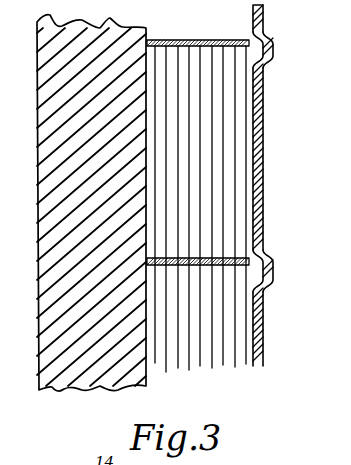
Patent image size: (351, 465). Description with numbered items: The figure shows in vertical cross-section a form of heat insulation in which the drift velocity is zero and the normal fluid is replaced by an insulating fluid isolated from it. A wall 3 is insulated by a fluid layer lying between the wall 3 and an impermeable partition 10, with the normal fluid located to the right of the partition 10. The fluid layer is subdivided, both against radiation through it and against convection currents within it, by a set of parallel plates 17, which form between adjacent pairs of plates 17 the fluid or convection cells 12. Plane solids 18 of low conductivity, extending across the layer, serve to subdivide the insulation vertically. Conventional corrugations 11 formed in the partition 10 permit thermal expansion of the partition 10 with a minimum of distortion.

The wall 3 is at (44, 88).
The impermeable partition 10 is at (258, 17).
The corrugations 11 is at (272, 50).
The fluid cells 12 is at (230, 183).
The parallel plates 17 is at (232, 131).
The plane solids 18 is at (255, 258).